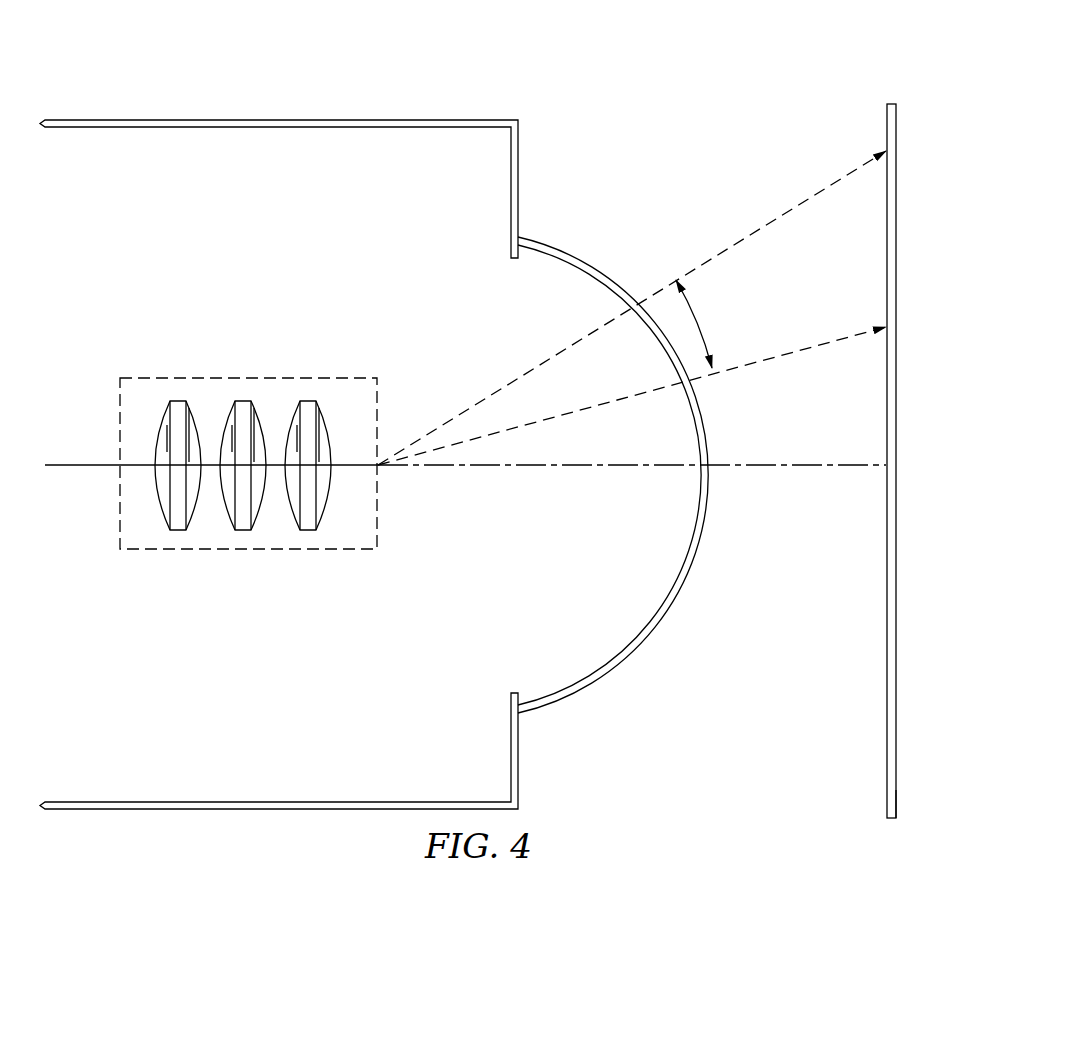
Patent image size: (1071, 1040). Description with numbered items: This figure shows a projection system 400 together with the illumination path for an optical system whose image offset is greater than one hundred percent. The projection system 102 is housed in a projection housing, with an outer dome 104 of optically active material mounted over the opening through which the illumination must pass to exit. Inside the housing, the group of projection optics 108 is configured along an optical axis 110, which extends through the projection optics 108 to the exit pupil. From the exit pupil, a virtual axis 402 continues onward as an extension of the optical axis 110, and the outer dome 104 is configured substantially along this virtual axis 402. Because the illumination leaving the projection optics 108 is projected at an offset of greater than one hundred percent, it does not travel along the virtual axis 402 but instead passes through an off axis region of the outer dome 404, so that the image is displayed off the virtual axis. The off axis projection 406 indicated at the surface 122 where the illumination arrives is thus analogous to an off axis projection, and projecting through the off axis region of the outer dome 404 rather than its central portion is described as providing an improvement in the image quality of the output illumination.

The projection system 400 is at (150, 89).
The projection system 102 is at (285, 690).
The outer dome 104 is at (570, 252).
The projection optics 108 is at (206, 378).
The optical axis 110 is at (92, 463).
The display screen 122 is at (891, 102).
The virtual axis 402 is at (572, 467).
The off axis region of the outer dome 404 is at (700, 323).
The off axis projection 406 is at (897, 797).